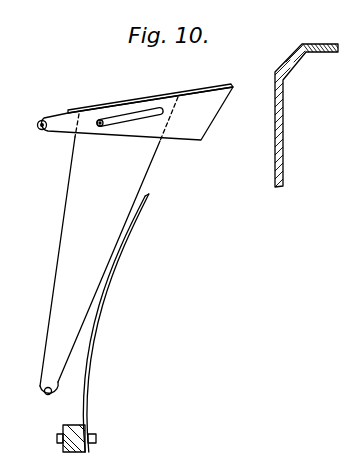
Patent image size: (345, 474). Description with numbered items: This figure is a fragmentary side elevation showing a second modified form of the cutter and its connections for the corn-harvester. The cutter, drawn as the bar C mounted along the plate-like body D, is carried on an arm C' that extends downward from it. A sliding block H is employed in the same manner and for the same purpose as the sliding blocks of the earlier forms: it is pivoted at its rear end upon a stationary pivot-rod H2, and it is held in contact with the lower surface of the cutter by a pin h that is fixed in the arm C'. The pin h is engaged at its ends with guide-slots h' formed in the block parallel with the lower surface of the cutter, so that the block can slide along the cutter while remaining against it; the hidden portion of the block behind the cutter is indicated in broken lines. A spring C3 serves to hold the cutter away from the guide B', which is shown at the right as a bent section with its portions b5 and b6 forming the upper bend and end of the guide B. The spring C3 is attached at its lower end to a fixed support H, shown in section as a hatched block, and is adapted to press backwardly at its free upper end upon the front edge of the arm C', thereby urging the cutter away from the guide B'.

The cutter D is at (233, 109).
The cutter C is at (150, 95).
The stationary pivot-rod H2 is at (54, 118).
The guide-slots h' is at (130, 137).
The pin h is at (97, 137).
The sliding block H is at (113, 282).
The arm C' is at (97, 188).
The spring C3 is at (100, 322).
The guide B is at (307, 111).
The guide B' is at (292, 111).
The bracket bend b5 is at (275, 60).
The bracket end b6 is at (323, 39).